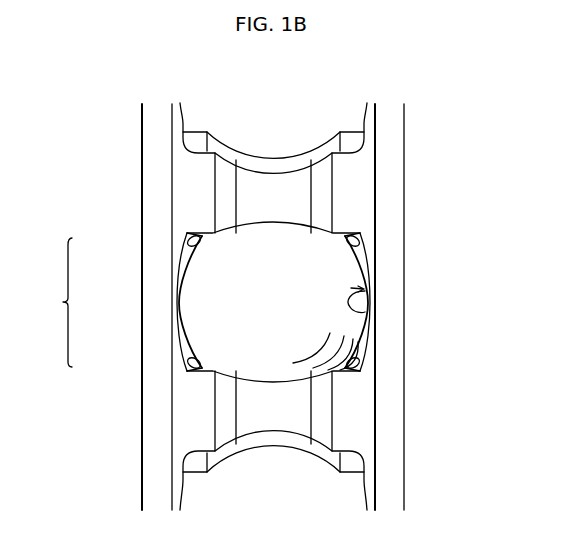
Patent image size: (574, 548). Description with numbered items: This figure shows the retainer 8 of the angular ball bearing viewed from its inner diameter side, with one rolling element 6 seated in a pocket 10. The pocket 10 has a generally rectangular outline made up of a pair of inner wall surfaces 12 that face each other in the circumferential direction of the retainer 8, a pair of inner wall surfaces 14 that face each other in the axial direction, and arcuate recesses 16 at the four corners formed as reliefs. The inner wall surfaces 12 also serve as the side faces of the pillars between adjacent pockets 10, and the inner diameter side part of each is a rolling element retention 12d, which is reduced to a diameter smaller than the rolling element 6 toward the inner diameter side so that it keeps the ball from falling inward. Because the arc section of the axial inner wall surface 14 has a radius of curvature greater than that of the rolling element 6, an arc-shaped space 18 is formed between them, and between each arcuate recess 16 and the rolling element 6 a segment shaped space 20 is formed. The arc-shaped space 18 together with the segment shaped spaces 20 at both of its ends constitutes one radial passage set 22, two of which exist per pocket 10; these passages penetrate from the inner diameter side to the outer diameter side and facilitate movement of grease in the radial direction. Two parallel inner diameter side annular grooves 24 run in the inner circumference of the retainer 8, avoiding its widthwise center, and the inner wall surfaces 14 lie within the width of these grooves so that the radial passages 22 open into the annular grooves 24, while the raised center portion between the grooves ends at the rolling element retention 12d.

The rolling element 6 is at (343, 278).
The retainer 8 is at (396, 193).
The pocket 10 is at (287, 133).
The inner wall surface 12 is at (275, 302).
The rolling element retention 12d is at (280, 163).
The inner wall surface 14 is at (192, 316).
The arcuate recess 16 is at (195, 236).
The arc-shaped space 18 is at (178, 302).
The segment shaped space 20 is at (187, 250).
The radial passage set 22 is at (53, 302).
The inner diameter side annular groove 24 is at (187, 418).